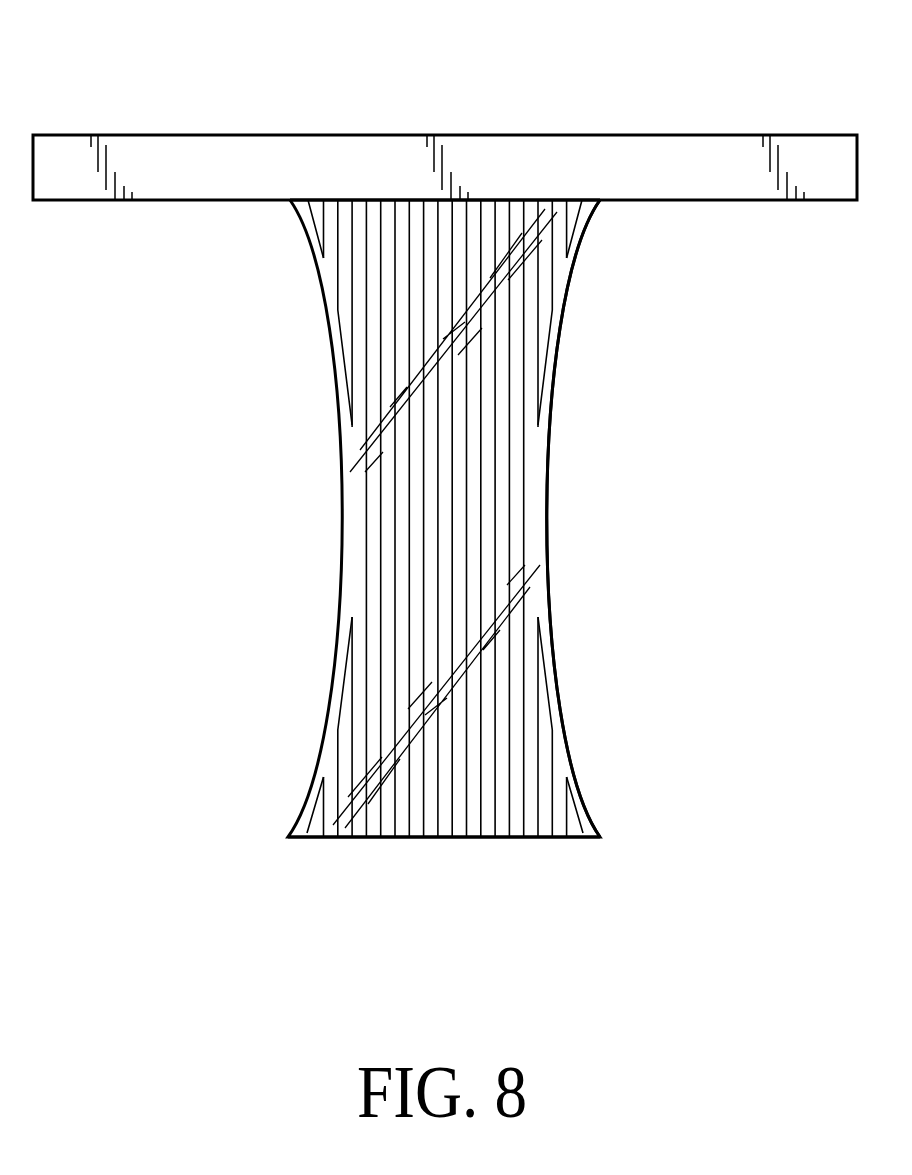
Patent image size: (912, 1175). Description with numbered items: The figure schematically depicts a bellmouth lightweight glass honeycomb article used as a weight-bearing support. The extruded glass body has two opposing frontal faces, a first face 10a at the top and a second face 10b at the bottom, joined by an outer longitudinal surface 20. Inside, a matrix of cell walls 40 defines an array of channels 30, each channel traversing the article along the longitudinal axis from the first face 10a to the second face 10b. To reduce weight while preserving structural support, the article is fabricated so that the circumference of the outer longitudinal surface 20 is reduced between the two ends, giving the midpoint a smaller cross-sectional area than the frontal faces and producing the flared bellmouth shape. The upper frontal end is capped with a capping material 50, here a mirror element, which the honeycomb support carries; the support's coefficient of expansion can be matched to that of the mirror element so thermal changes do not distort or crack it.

The first face 10a is at (433, 200).
The second face 10b is at (358, 838).
The outer longitudinal surface 20 is at (553, 638).
The channels 30 is at (518, 445).
The cell walls 40 is at (540, 295).
The capping material 50 is at (702, 136).